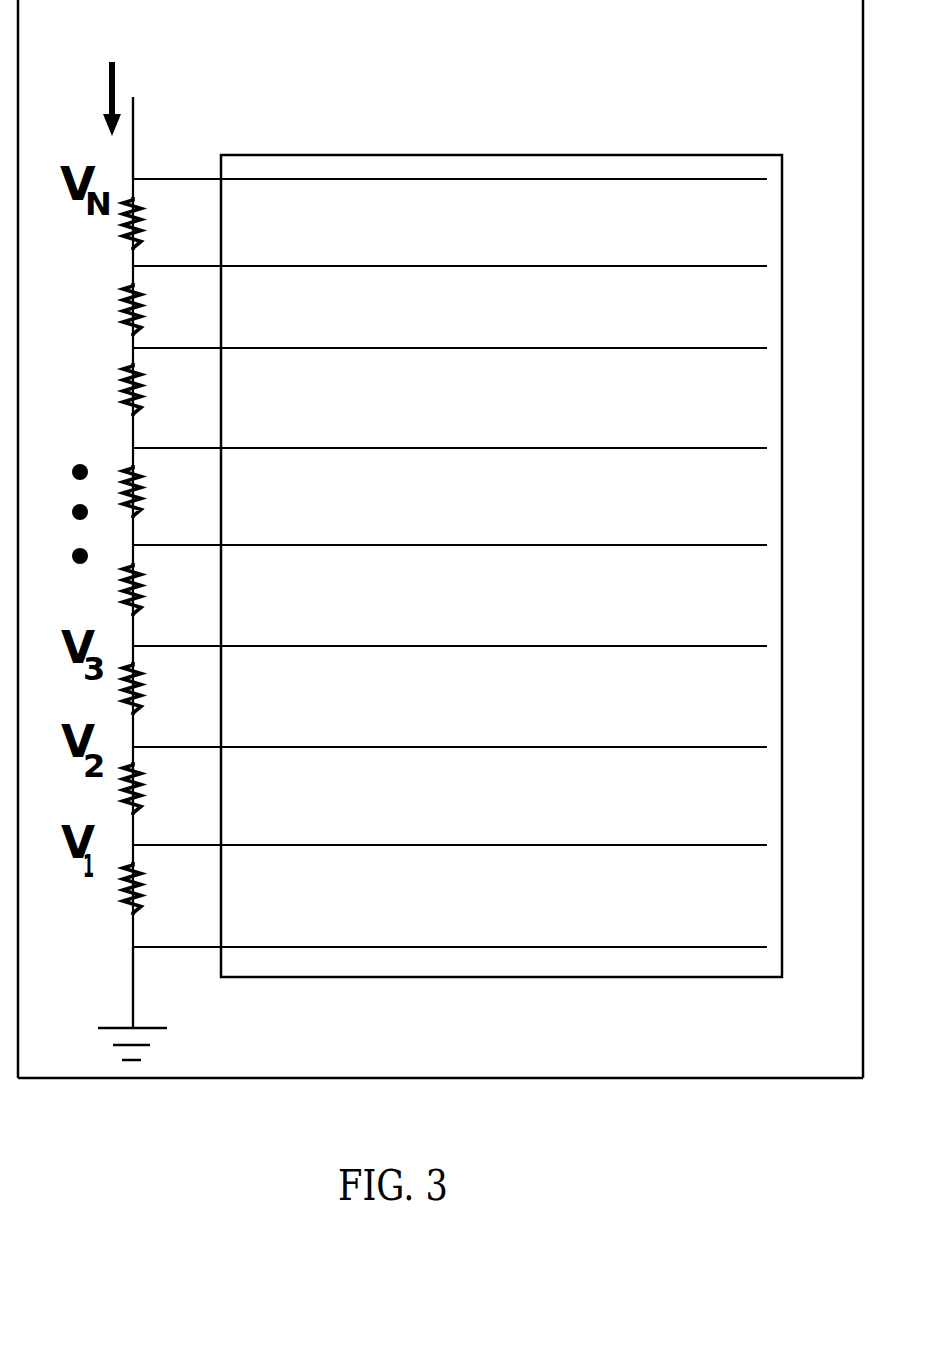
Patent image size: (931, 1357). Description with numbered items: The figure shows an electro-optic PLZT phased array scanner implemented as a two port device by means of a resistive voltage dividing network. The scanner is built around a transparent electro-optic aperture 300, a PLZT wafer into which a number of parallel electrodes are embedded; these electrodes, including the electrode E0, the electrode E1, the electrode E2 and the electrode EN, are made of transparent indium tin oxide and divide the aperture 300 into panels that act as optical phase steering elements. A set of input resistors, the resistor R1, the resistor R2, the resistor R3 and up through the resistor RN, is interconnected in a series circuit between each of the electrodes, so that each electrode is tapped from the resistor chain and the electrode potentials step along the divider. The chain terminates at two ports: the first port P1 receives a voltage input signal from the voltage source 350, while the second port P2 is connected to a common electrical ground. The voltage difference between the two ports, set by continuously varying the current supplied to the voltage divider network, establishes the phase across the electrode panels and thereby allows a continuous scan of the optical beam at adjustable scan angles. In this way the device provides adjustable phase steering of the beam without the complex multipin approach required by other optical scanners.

The voltage source 350 is at (78, 69).
The transparent electro-optic aperture 300 is at (501, 566).
The input resistor R_N RN is at (164, 222).
The input resistor R_3 R3 is at (161, 686).
The input resistor R_2 R2 is at (161, 785).
The input resistor R_1 R1 is at (161, 886).
The first port P1 is at (163, 135).
The second port P2 is at (158, 1009).
The electrode E_N EN is at (529, 190).
The electrode E_2 E2 is at (527, 756).
The electrode E_1 E1 is at (522, 855).
The electrode E_0 E0 is at (527, 958).